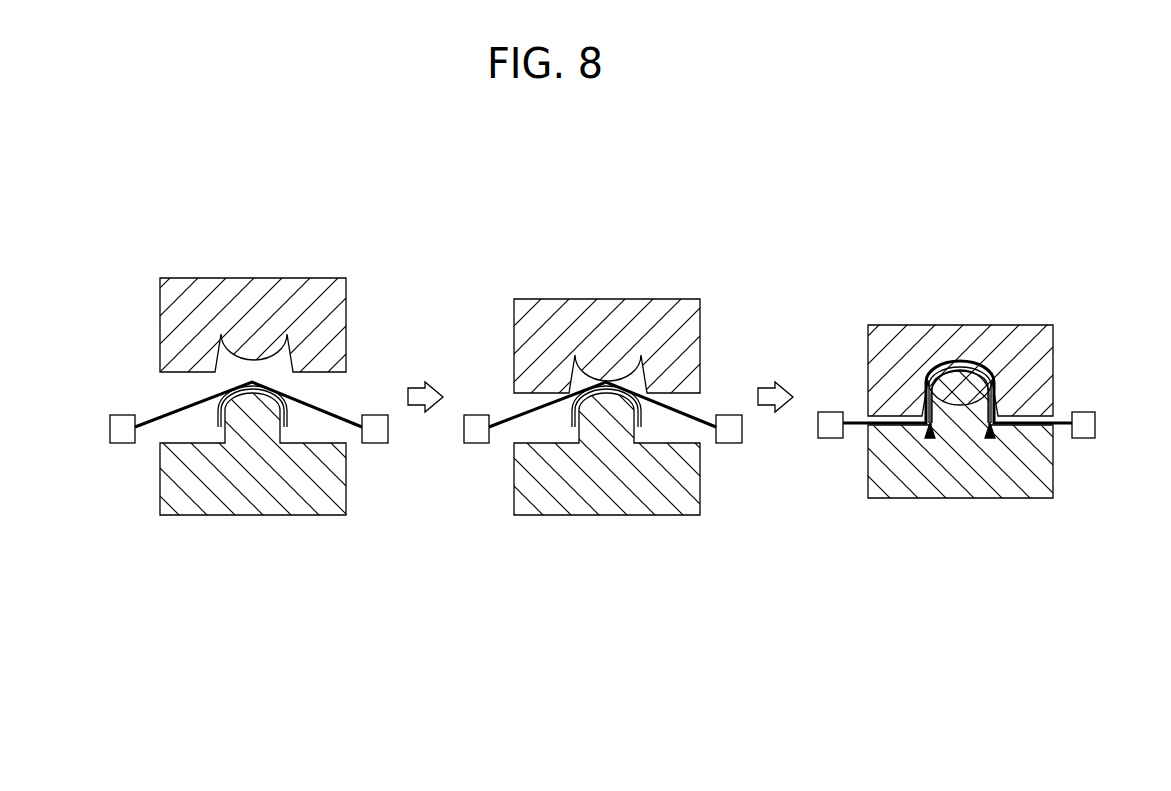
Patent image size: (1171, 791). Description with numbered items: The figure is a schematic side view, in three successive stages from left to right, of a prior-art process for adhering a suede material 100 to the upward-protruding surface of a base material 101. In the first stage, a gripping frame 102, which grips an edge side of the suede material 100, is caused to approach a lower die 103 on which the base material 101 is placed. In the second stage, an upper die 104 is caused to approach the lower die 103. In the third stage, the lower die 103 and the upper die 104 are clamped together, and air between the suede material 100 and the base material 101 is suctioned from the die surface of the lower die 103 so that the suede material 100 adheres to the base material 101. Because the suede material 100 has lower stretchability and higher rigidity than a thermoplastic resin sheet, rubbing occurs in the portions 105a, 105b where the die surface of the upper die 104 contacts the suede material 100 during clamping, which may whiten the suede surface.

The suede material 100 is at (190, 404).
The base material 101 is at (247, 383).
The gripping frame 102 is at (123, 416).
The lower die 103 is at (253, 496).
The upper die 104 is at (300, 288).
The portion where die surface of upper die contacts suede material 105a is at (930, 440).
The portion where die surface of upper die contacts suede material 105b is at (990, 440).